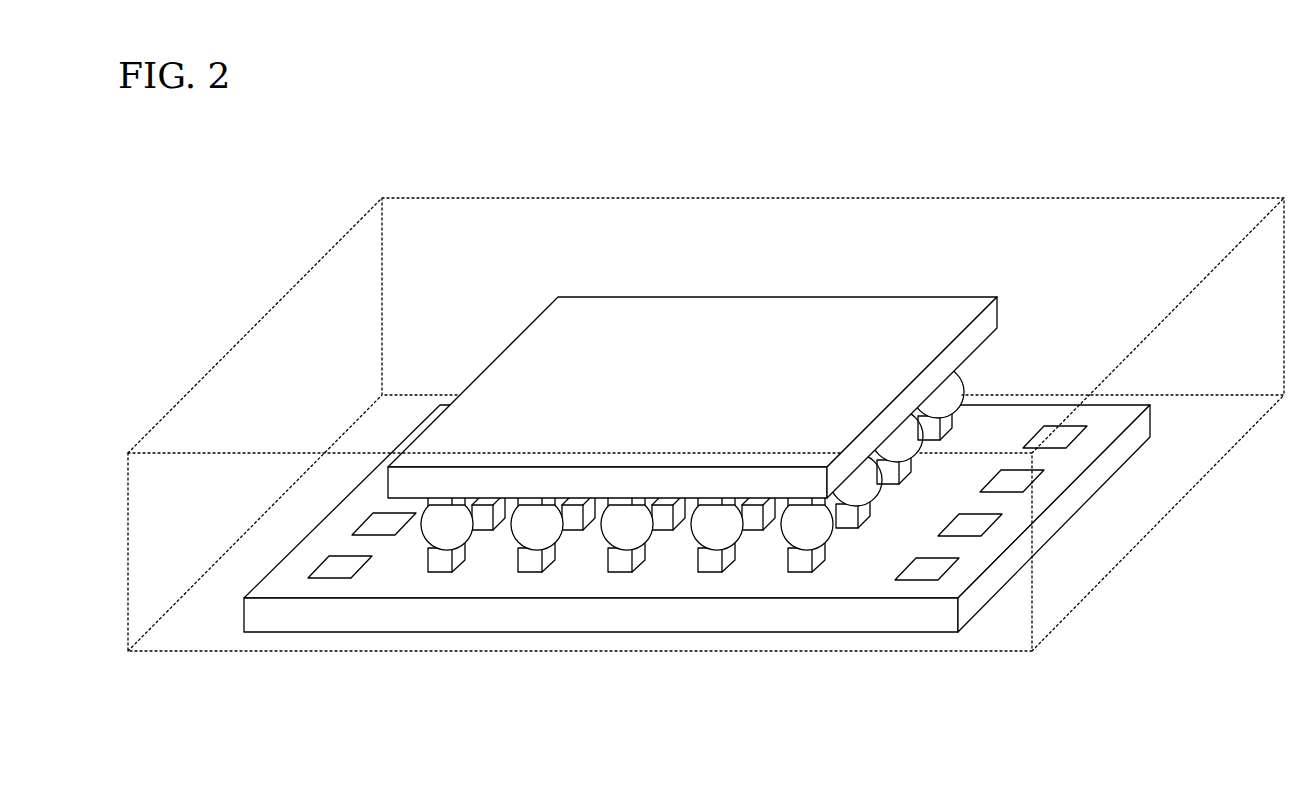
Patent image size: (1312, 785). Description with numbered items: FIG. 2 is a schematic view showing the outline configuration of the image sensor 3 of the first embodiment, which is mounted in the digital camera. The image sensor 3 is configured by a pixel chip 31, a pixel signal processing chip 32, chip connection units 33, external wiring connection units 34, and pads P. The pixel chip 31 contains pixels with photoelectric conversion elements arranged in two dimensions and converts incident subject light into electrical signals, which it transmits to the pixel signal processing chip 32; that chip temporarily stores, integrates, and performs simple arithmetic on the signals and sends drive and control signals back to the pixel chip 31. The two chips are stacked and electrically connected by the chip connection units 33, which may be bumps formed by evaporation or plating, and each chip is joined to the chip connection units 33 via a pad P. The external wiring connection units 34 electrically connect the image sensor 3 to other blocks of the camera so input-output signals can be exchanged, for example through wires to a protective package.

The image sensor 3 is at (783, 198).
The pixel chip 31 is at (998, 313).
The pixel signal processing chip 32 is at (1152, 415).
The chip connection units 33 is at (425, 543).
The external wiring connection units 34 is at (915, 581).
The pad P is at (819, 500).